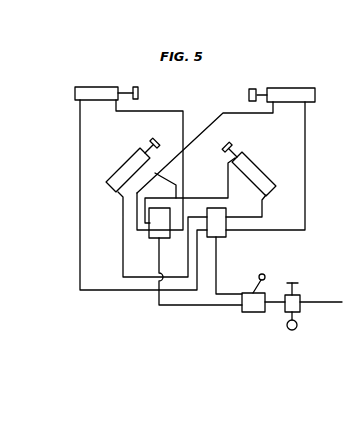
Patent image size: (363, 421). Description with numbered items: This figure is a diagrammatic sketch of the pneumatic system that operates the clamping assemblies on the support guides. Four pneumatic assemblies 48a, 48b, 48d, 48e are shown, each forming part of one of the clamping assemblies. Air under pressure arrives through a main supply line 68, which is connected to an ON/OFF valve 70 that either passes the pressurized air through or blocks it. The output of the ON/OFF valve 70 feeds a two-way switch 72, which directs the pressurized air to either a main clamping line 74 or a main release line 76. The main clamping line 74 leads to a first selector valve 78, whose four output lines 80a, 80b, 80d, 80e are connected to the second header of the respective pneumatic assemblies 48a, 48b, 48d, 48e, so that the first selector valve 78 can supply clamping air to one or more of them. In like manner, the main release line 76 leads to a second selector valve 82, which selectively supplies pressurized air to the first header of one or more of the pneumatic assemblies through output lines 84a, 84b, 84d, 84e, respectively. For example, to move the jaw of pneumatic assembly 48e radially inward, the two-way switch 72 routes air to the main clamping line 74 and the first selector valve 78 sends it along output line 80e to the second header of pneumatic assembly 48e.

The pneumatic assembly 48a is at (78, 86).
The pneumatic assembly 48b is at (122, 165).
The pneumatic assembly 48d is at (248, 162).
The pneumatic assembly 48e is at (283, 88).
The main supply line 68 is at (312, 302).
The ON/OFF valve 70 is at (298, 310).
The two-way switch 72 is at (255, 312).
The main clamping line 74 is at (217, 258).
The main release line 76 is at (207, 308).
The first selector valve 78 is at (226, 210).
The output line 80a is at (103, 290).
The output line 80b is at (124, 248).
The output line 80d is at (262, 200).
The output line 80e is at (307, 178).
The second selector valve 82 is at (158, 238).
The output line 84a is at (147, 115).
The output line 84b is at (176, 182).
The output line 84d is at (227, 167).
The output line 84e is at (205, 128).